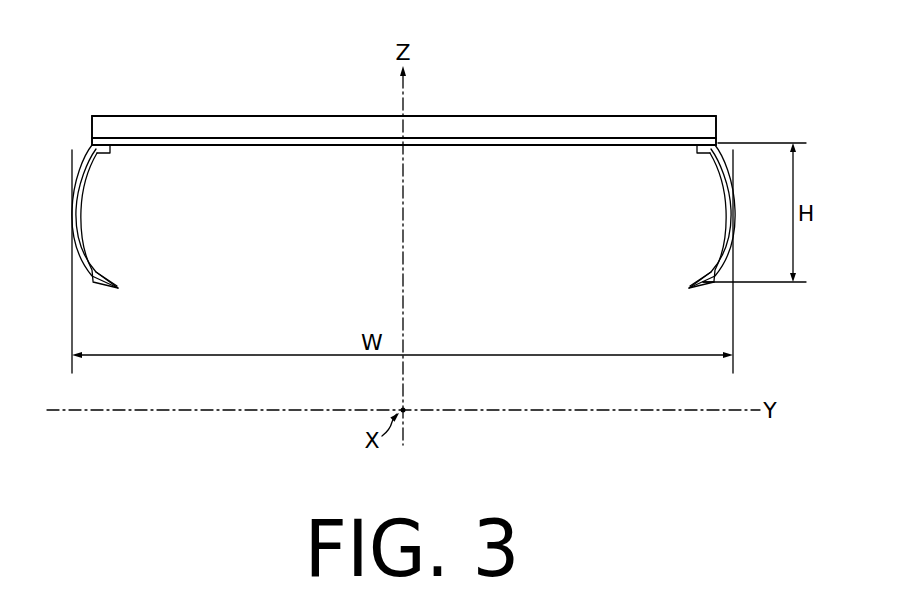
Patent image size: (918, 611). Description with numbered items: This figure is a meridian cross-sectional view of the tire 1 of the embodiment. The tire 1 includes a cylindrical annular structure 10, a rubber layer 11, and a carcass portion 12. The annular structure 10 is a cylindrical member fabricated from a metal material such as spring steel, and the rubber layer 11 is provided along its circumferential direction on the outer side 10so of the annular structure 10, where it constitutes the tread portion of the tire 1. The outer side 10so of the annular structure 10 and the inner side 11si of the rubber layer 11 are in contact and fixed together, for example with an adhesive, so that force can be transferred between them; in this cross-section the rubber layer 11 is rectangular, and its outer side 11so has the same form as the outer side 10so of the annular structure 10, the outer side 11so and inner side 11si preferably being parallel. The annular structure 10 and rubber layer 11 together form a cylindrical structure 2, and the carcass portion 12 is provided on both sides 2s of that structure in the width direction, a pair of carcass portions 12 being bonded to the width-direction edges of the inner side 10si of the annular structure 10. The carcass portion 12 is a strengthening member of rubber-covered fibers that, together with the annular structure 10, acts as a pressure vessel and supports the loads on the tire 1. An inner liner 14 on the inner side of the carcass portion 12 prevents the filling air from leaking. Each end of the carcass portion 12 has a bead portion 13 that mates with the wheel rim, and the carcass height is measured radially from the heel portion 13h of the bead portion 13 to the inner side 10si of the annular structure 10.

The tire 1 is at (664, 54).
The cylindrical structure 2 is at (123, 58).
The sides of the cylindrical structure 2s is at (80, 128).
The annular structure 10 is at (191, 143).
The outer side of the annular structure 10so is at (275, 135).
The inner side of the annular structure 10si is at (230, 148).
The rubber layer 11 is at (143, 126).
The outer side of the rubber layer 11so is at (560, 116).
The inner side of the rubber layer 11si is at (561, 146).
The carcass portion 12 is at (73, 208).
The bead portion 13 is at (104, 282).
The heel portion 13h is at (712, 287).
The inner liner 14 is at (82, 208).